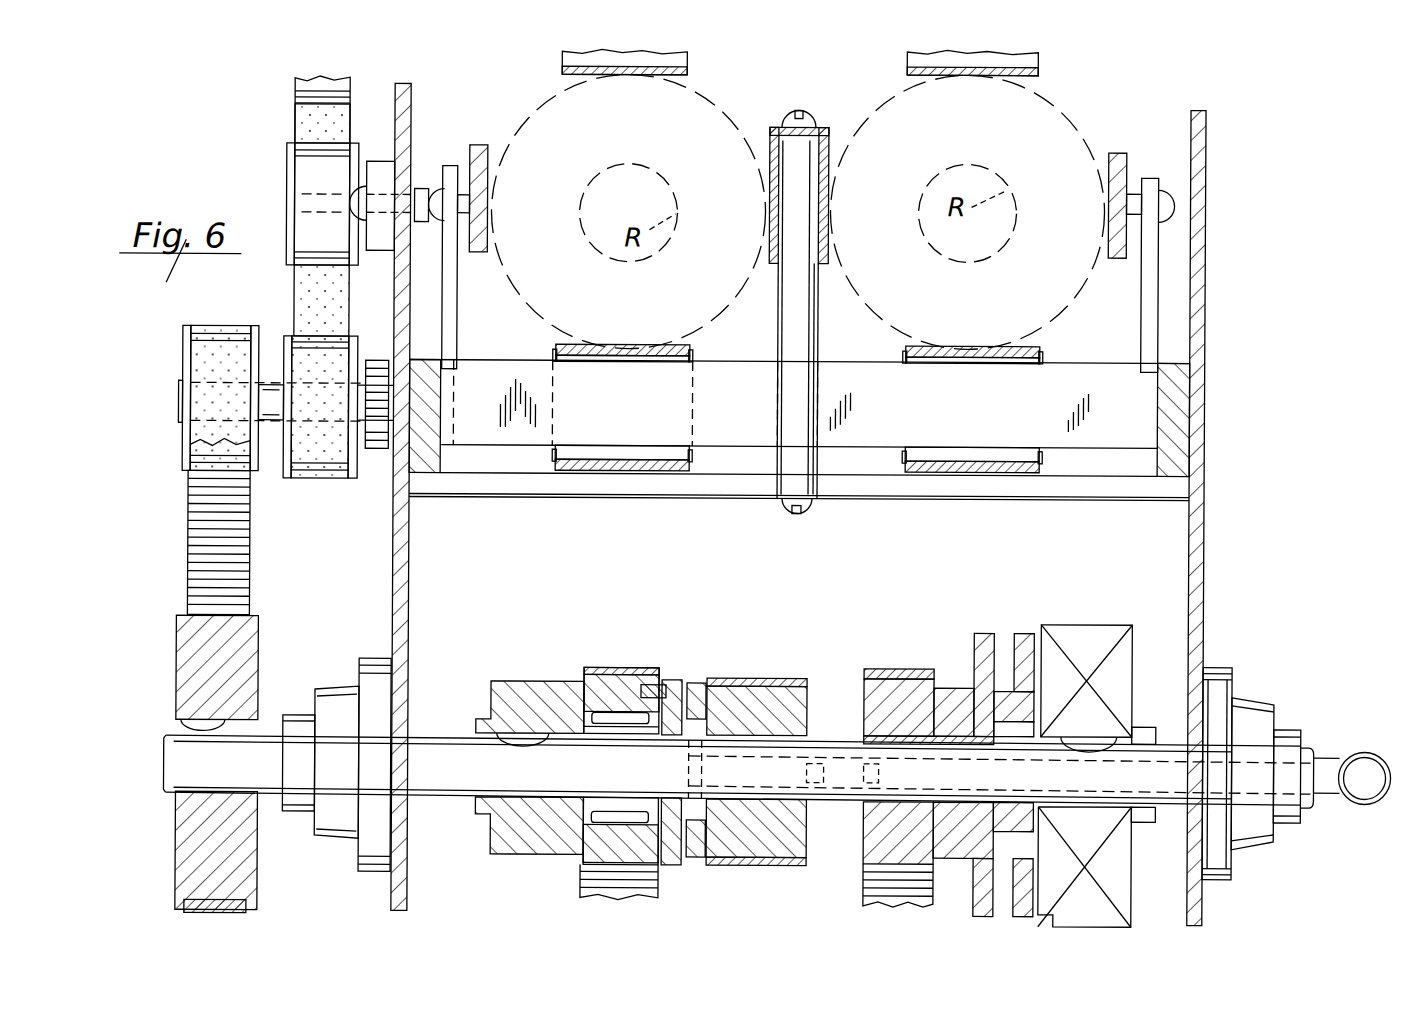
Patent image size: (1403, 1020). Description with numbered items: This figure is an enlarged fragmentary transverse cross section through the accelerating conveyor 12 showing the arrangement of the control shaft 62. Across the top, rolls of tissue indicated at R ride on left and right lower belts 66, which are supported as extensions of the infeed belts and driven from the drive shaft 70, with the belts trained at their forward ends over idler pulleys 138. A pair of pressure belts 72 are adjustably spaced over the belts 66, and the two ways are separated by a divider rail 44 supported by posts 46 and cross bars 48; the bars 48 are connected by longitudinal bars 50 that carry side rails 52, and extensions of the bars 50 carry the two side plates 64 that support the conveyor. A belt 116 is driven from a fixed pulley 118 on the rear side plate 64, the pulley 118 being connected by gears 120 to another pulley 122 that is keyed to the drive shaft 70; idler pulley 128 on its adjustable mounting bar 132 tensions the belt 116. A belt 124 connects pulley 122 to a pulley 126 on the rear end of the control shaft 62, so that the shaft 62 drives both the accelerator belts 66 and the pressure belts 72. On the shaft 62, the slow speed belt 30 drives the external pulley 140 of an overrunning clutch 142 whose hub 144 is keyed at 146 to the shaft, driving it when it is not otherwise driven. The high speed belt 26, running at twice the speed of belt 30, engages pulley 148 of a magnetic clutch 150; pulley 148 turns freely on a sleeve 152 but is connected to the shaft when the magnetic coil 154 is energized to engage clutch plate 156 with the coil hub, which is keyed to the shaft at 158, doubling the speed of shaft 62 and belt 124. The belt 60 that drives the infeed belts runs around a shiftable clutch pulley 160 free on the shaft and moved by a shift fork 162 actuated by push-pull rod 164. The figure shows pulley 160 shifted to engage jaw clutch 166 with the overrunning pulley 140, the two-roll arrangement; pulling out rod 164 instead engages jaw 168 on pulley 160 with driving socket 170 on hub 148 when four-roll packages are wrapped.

The accelerating conveyor 12 is at (1214, 269).
The high speed belt 26 is at (870, 894).
The slow speed belt 30 is at (661, 880).
The divider rail 44 is at (820, 128).
The post 46 is at (790, 305).
The cross bar 48 is at (923, 498).
The longitudinal bar 50 is at (424, 470).
The side rail 52 is at (487, 150).
The belt 60 is at (779, 678).
The control shaft 62 is at (430, 752).
The side plate 64 is at (410, 579).
The lower belt 66 is at (560, 347).
The drive shaft 70 is at (178, 403).
The pressure belt 72 is at (688, 68).
The belt 116 is at (305, 130).
The fixed pulley 118 is at (283, 332).
The gear 120 is at (372, 447).
The pulley 122 is at (186, 352).
The belt 124 is at (252, 572).
The pulley 126 is at (258, 646).
The idler pulley 128 is at (358, 150).
The mounting bar 132 is at (380, 247).
The idler pulley 138 is at (552, 455).
The external pulley 140 is at (632, 668).
The overrunning clutch 142 is at (601, 666).
The hub 144 is at (505, 692).
The key 146 is at (516, 742).
The pulley 148 is at (895, 682).
The magnetic clutch 150 is at (991, 628).
The sleeve 152 is at (870, 742).
The magnetic coil 154 is at (1106, 626).
The clutch plate 156 is at (1032, 632).
The key 158 is at (1082, 748).
The shiftable clutch pulley 160 is at (788, 836).
The shift fork 162 is at (682, 692).
The push-pull rod 164 is at (1323, 766).
The jaw clutch 166 is at (668, 690).
The jaw 168 is at (825, 778).
The driving socket 170 is at (882, 771).